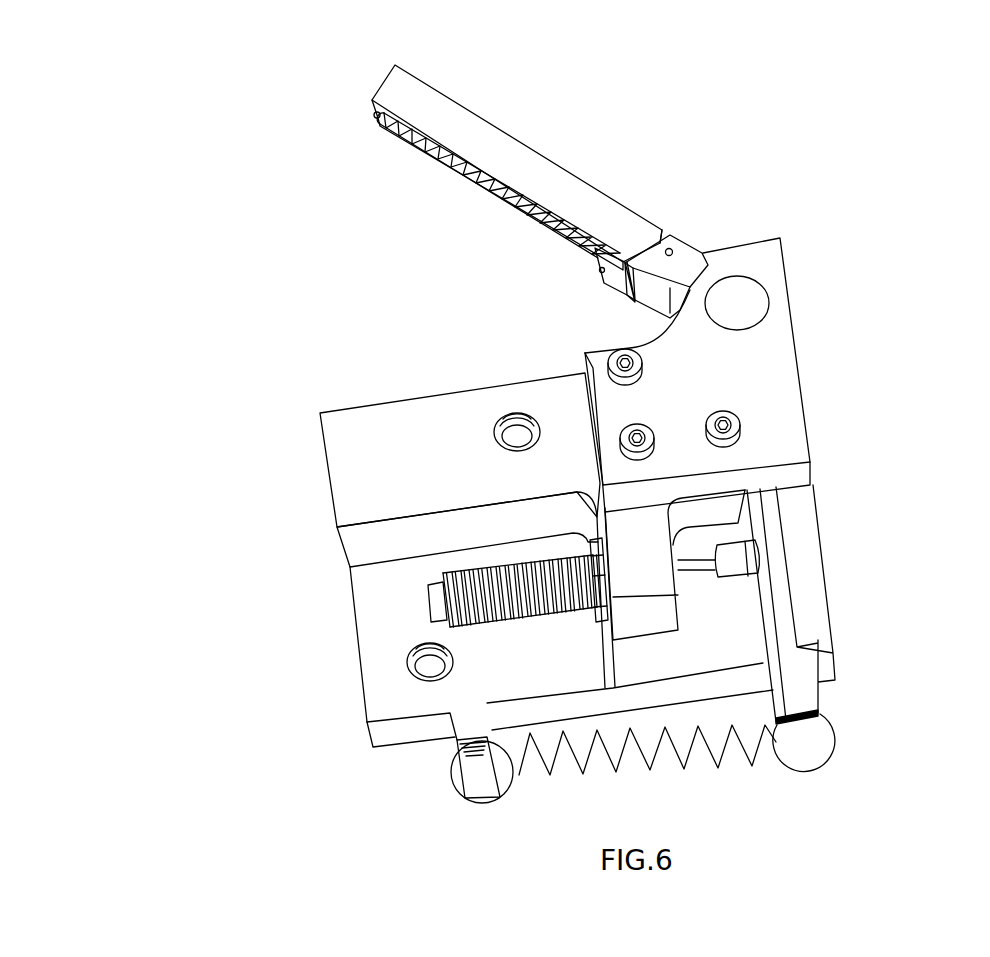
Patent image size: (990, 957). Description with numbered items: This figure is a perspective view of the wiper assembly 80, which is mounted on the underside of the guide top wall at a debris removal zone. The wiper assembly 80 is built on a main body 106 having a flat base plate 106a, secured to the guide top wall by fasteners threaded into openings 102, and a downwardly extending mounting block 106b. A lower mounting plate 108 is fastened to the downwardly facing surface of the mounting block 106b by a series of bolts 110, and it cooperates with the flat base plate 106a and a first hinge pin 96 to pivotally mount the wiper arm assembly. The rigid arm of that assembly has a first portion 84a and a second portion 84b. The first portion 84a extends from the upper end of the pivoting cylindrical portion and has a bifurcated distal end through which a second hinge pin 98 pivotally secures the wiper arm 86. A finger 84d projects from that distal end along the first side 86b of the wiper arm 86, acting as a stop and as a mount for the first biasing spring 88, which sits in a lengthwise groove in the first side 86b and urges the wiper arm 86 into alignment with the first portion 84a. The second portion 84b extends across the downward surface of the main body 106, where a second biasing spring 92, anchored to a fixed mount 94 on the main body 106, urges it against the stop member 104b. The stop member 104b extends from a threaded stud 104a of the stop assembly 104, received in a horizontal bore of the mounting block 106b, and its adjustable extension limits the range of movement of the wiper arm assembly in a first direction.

The wiper assembly 80 is at (305, 280).
The wiper arm 86 is at (490, 120).
The first side of the wiper arm 86b is at (403, 150).
The first biasing spring 88 is at (495, 205).
The finger 84d is at (612, 288).
The first portion of the rigid arm 84a is at (678, 248).
The second hinge pin 98 is at (672, 249).
The lower mounting plate 108 is at (797, 380).
The first hinge pin 96 is at (745, 297).
The bolts 110 is at (612, 355).
The main body 106 is at (272, 789).
The mounting block 106b is at (343, 492).
The flat base plate 106a is at (372, 645).
The openings 102 is at (505, 410).
The stud 104a is at (520, 613).
The stop assembly 104 is at (663, 660).
The stop member 104b is at (736, 570).
The second portion of the rigid arm 84b is at (798, 590).
The fixed mount 94 is at (475, 763).
The second biasing spring 92 is at (620, 770).